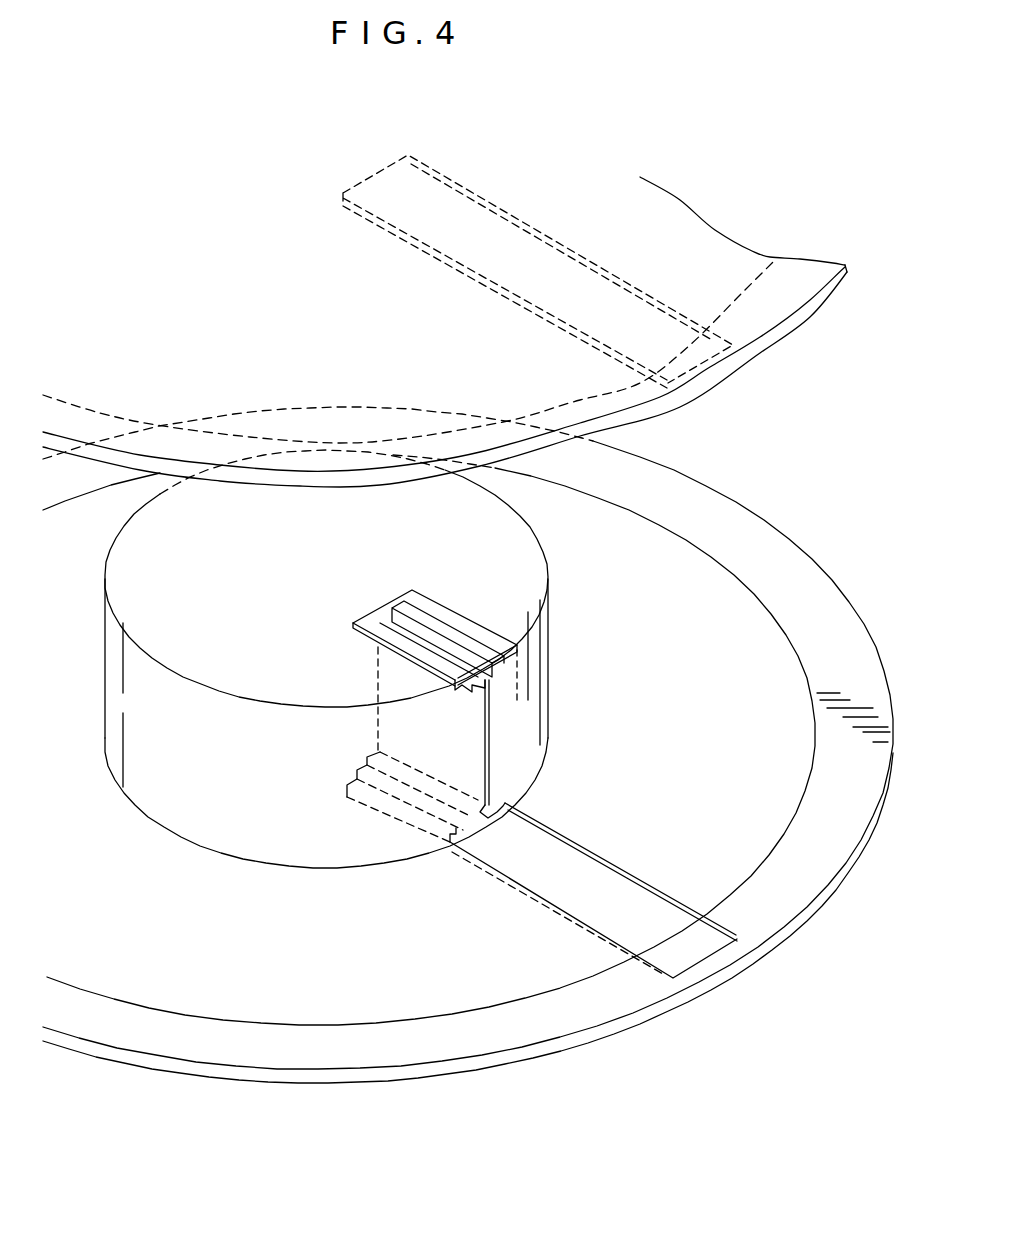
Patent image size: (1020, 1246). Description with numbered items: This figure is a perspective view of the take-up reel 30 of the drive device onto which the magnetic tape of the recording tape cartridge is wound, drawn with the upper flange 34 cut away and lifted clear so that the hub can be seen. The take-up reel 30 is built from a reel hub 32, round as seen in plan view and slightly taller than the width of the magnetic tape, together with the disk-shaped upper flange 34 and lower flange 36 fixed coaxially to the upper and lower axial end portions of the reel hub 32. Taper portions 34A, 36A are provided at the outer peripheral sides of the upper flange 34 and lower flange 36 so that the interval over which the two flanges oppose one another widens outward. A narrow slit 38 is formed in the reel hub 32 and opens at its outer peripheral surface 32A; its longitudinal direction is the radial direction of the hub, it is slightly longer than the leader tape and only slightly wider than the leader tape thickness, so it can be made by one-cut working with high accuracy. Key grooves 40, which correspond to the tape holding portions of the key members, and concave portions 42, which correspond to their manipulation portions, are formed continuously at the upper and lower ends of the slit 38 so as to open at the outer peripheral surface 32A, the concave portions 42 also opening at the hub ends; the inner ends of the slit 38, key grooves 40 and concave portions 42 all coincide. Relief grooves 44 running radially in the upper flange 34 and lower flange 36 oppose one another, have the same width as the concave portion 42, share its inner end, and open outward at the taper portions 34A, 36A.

The take-up reel 30 is at (644, 110).
The reel hub 32 is at (533, 553).
The outer peripheral surface 32A is at (275, 835).
The upper flange 34 is at (717, 243).
The taper portion 34A is at (768, 325).
The lower flange 36 is at (690, 568).
The taper portion 36A is at (785, 563).
The slit 38 is at (463, 649).
The key groove 40 is at (416, 627).
The concave portion 42 is at (500, 595).
The relief groove 44 is at (568, 256).